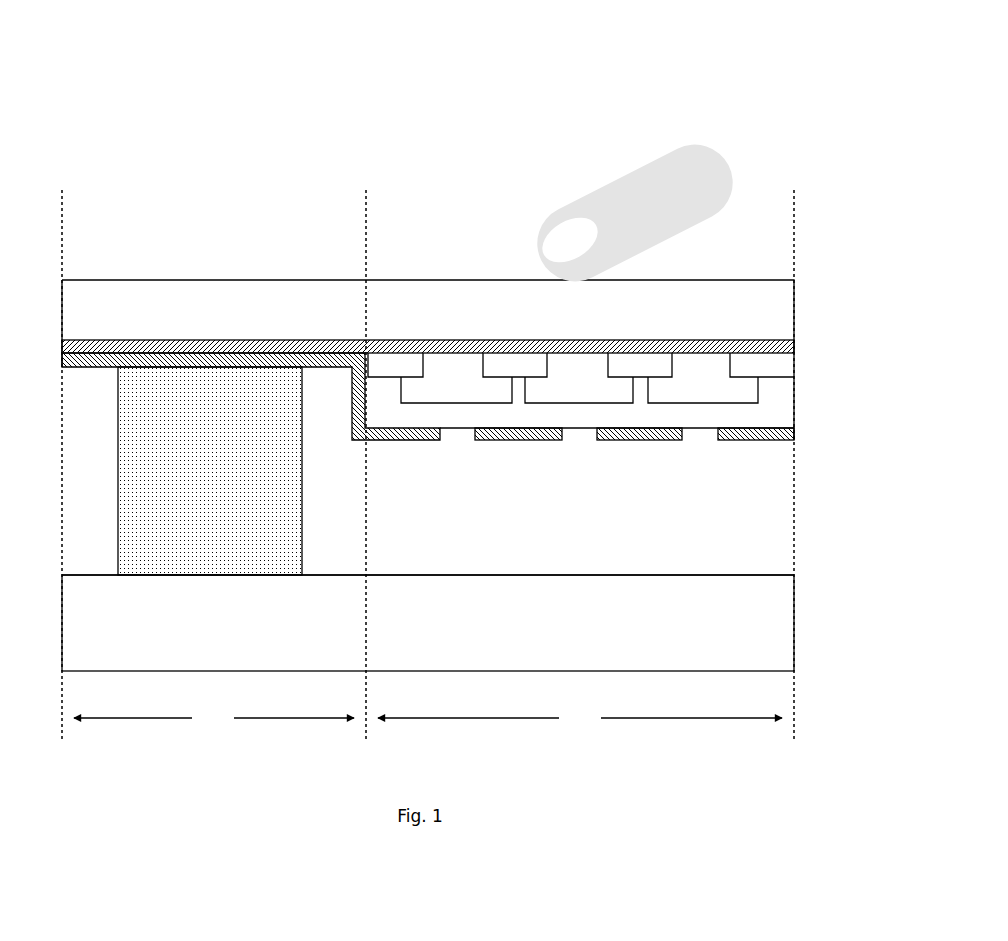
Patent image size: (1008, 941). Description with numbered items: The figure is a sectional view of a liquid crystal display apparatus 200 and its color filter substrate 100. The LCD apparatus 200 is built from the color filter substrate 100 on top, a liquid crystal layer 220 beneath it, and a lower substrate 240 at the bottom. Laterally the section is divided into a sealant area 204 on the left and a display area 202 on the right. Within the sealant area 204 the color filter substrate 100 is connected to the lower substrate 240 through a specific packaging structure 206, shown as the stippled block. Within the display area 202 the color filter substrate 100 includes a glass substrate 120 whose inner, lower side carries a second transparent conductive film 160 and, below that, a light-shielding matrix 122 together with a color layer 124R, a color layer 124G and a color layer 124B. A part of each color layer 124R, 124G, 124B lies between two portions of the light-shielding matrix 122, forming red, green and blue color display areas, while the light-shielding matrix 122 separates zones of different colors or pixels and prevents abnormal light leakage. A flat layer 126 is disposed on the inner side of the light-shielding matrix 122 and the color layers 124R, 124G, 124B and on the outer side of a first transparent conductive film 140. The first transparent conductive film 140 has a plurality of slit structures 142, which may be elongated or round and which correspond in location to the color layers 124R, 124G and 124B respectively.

The liquid crystal display apparatus 200 is at (318, 134).
The color filter substrate 100 is at (813, 280).
The glass substrate 120 is at (512, 280).
The second transparent conductive film 160 is at (452, 340).
The light-shielding matrix 122 is at (581, 365).
The color layer 124R is at (456, 386).
The color layer 124G is at (579, 386).
The color layer 124B is at (703, 386).
The flat layer 126 is at (617, 415).
The first transparent conductive film 140 is at (757, 488).
The slit structure 142 is at (459, 450).
The packaging structure 206 is at (118, 470).
The liquid crystal layer 220 is at (813, 443).
The lower substrate 240 is at (813, 575).
The sealant area 204 is at (214, 718).
The display area 202 is at (580, 718).